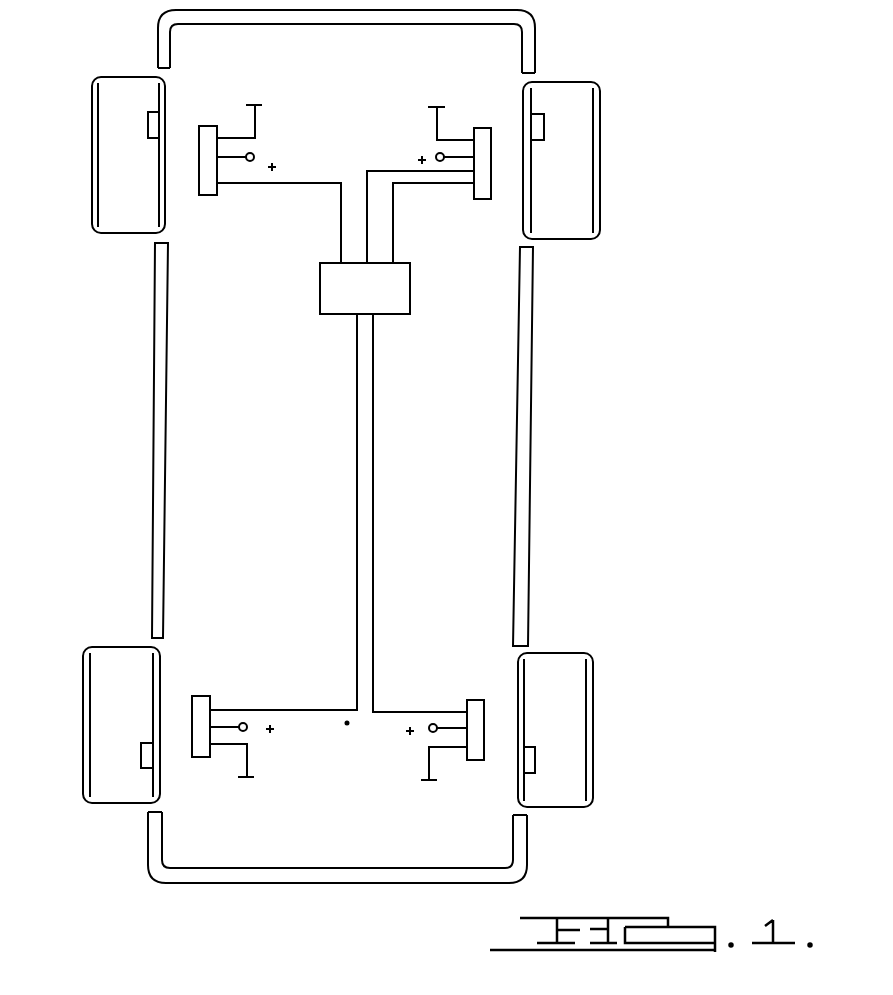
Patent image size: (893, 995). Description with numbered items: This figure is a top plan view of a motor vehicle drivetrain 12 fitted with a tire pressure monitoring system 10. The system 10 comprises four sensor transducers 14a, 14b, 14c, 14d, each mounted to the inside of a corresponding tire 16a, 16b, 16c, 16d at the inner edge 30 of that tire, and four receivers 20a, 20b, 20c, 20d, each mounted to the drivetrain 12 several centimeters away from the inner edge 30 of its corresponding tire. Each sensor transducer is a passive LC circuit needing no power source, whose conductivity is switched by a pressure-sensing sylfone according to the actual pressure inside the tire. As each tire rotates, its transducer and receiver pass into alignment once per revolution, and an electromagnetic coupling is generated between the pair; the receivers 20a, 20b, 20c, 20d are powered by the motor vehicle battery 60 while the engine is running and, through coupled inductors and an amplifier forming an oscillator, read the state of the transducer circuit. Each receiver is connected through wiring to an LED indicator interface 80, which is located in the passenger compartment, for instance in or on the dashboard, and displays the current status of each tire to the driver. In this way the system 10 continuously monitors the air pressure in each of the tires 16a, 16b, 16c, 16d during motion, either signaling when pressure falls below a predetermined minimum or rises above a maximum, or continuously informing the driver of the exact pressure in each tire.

The tire pressure monitoring system 10 is at (676, 116).
The drivetrain 12 is at (368, 475).
The sensor transducer 14a is at (542, 123).
The sensor transducer 14b is at (525, 760).
The sensor transducer 14c is at (147, 763).
The sensor transducer 14d is at (152, 118).
The tire 16a is at (600, 215).
The tire 16b is at (593, 733).
The tire 16c is at (85, 800).
The tire 16d is at (93, 212).
The receiver 20a is at (481, 193).
The receiver 20b is at (475, 705).
The receiver 20c is at (207, 705).
The receiver 20d is at (207, 190).
The inner edge 30 is at (165, 137).
The motor vehicle battery 60 is at (254, 155).
The LED indicator interface 80 is at (333, 308).